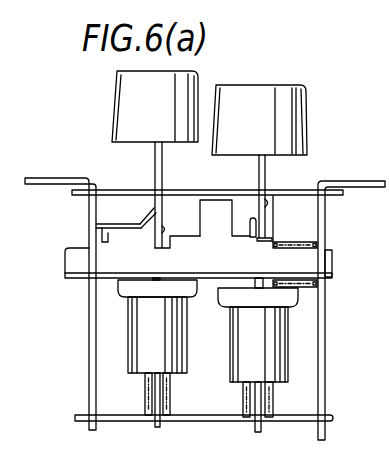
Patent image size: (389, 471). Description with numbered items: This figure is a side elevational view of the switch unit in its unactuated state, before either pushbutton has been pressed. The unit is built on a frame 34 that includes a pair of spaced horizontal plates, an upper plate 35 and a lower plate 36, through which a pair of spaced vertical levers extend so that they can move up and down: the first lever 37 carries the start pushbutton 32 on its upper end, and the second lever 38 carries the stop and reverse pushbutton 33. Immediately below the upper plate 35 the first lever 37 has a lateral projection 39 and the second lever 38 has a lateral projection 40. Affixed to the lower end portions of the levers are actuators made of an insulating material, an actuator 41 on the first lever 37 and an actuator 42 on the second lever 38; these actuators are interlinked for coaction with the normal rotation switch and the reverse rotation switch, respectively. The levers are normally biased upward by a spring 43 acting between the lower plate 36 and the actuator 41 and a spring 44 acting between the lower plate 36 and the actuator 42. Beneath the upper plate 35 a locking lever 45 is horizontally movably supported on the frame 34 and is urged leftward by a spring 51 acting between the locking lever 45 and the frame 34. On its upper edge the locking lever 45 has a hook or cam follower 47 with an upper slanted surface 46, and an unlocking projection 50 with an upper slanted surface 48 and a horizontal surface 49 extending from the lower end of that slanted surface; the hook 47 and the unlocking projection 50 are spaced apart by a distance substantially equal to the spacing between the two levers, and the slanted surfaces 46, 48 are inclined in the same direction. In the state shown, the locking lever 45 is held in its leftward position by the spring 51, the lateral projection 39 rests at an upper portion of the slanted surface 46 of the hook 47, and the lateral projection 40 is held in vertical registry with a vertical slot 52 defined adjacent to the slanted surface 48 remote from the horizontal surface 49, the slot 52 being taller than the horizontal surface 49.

The start pushbutton 32 is at (300, 107).
The stop and reverse pushbutton 33 is at (118, 108).
The frame 34 is at (318, 360).
The upper plate 35 is at (300, 192).
The lower plate 36 is at (333, 423).
The first lever 37 is at (259, 173).
The second lever 38 is at (155, 165).
The lateral projection 39 is at (266, 202).
The lateral projection 40 is at (163, 200).
The actuator 41 is at (280, 338).
The actuator 42 is at (128, 338).
The spring 43 is at (272, 392).
The spring 44 is at (143, 411).
The locking lever 45 is at (78, 265).
The upper slanted surface 46 is at (226, 217).
The hook or cam follower 47 is at (235, 214).
The upper slanted surface 48 is at (152, 218).
The horizontal surface 49 is at (112, 220).
The unlocking projection 50 is at (103, 237).
The spring 51 is at (305, 238).
The vertical slot 52 is at (158, 232).